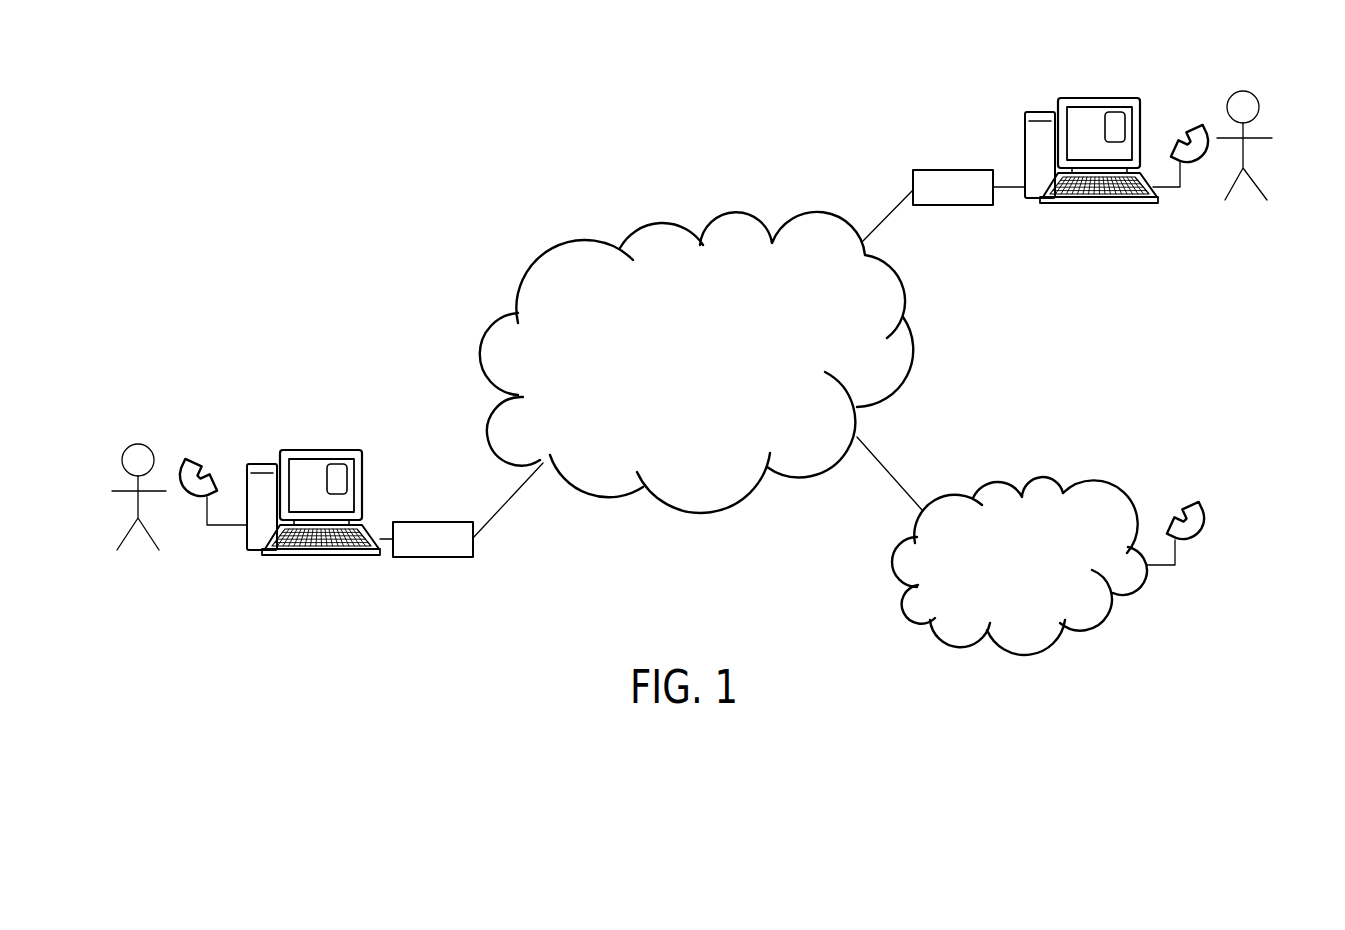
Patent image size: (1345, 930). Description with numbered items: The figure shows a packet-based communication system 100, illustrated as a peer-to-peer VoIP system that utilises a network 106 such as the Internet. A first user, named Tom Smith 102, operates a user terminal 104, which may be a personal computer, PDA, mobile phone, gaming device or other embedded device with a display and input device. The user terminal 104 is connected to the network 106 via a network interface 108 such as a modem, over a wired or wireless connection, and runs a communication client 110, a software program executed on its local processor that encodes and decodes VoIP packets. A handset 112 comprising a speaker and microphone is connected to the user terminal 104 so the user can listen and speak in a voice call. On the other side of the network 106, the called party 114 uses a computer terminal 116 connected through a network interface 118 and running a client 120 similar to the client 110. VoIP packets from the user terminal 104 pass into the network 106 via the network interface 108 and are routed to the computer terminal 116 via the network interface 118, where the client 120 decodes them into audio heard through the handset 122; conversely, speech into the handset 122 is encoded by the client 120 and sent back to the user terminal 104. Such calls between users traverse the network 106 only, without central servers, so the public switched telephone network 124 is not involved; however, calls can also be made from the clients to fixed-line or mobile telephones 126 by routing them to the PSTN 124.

The packet-based communication system 100 is at (447, 206).
The first user 102 is at (1243, 91).
The user terminal 104 is at (1072, 98).
The network 106 is at (913, 363).
The network interface 108 is at (953, 170).
The communication client 110 is at (1115, 112).
The handset 112 is at (1190, 118).
The called party 114 is at (138, 444).
The computer terminal 116 is at (290, 450).
The network interface 118 is at (432, 522).
The client 120 is at (336, 464).
The handset 122 is at (187, 450).
The public switched telephone network 124 is at (1007, 655).
The fixed-line or mobile telephone 126 is at (1192, 498).